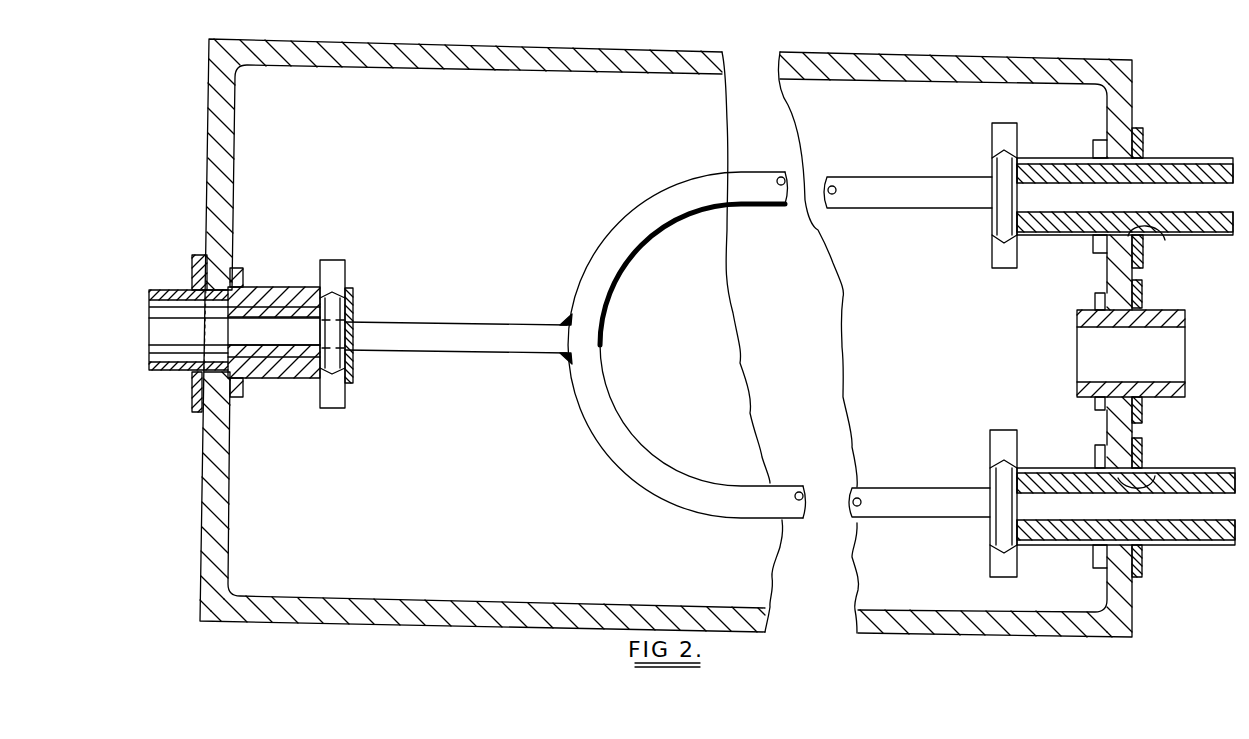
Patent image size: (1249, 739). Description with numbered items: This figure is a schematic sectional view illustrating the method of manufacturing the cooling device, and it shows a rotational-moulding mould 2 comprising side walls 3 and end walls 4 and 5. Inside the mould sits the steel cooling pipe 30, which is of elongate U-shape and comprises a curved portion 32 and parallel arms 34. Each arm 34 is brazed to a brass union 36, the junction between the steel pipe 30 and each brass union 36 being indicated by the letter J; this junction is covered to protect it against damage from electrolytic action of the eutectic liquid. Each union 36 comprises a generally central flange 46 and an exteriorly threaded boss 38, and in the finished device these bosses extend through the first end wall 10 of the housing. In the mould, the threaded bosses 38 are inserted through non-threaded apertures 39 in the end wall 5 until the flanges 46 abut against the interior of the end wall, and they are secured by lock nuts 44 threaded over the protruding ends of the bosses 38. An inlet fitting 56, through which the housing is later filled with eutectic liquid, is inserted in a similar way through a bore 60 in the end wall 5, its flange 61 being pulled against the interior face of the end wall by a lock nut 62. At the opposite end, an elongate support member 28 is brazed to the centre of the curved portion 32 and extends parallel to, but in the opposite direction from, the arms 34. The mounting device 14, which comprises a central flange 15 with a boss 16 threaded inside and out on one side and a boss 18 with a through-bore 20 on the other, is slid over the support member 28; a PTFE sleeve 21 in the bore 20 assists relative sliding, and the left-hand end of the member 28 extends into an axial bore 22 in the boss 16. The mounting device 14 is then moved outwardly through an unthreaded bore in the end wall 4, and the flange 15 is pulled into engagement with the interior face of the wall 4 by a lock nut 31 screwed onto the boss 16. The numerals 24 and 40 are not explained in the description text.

The rotational-moulding mould 2 is at (481, 333).
The side walls 3 is at (645, 52).
The end wall 4 is at (210, 126).
The end wall 5 is at (974, 344).
The first end wall 10 is at (1114, 98).
The mounting device 14 is at (360, 295).
The central flange 15 is at (241, 276).
The boss 16 is at (150, 299).
The boss 18 is at (357, 300).
The through-bore 20 is at (357, 318).
The sleeve 21 is at (274, 341).
The axial bore 22 is at (202, 376).
The locking ring 24 is at (200, 282).
The support member 28 is at (486, 344).
The cooling pipe 30 is at (220, 372).
The lock nut 31 is at (203, 252).
The curved portion 32 is at (598, 382).
The parallel arms 34 is at (839, 192).
The brass union 36 is at (1006, 143).
The threaded boss 38 is at (1163, 170).
The non-threaded apertures 39 is at (1165, 240).
The lock nut 40 is at (1140, 148).
The lock nuts 44 is at (1140, 258).
The central flange 46 is at (1097, 558).
The inlet fitting 56 is at (1080, 318).
The bore 60 is at (1113, 354).
The flange 61 is at (1095, 404).
The lock nut 62 is at (1145, 410).
The junction J is at (986, 218).